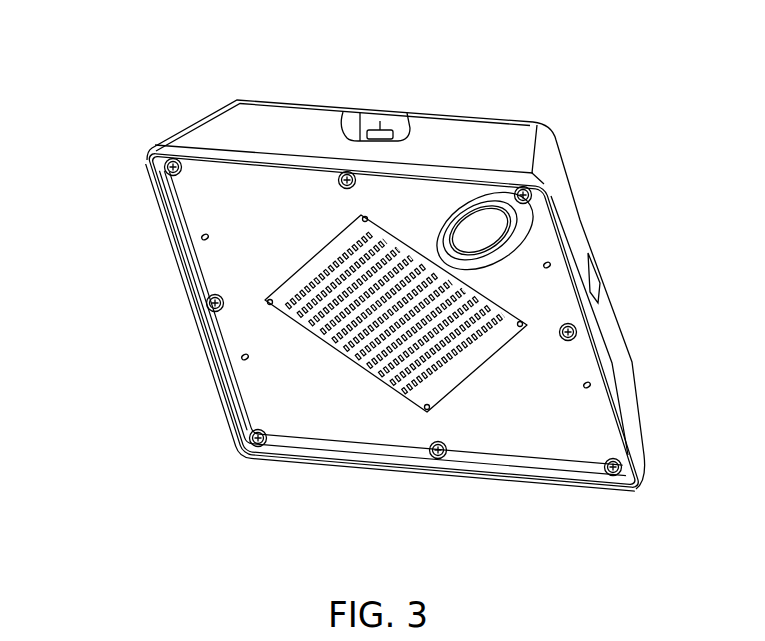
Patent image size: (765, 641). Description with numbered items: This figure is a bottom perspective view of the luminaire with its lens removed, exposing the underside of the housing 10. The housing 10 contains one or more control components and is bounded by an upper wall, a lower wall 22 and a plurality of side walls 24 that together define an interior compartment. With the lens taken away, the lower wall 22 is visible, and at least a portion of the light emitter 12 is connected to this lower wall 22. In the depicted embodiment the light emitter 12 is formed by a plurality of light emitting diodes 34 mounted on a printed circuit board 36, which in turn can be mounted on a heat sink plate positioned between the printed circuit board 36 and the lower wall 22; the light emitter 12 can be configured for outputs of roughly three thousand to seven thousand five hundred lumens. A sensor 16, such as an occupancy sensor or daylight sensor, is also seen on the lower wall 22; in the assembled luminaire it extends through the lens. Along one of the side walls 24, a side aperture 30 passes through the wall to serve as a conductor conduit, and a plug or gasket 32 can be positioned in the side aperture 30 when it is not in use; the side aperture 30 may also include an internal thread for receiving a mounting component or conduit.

The housing 10 is at (165, 237).
The light emitter 12 is at (487, 368).
The sensor 16 is at (522, 242).
The lower wall 22 is at (277, 380).
The side walls 24 is at (271, 118).
The side aperture 30 is at (372, 123).
The plug or gasket 32 is at (385, 128).
The light emitting diodes 34 is at (395, 378).
The printed circuit board 36 is at (437, 392).